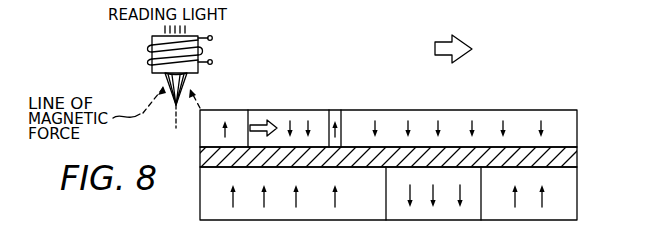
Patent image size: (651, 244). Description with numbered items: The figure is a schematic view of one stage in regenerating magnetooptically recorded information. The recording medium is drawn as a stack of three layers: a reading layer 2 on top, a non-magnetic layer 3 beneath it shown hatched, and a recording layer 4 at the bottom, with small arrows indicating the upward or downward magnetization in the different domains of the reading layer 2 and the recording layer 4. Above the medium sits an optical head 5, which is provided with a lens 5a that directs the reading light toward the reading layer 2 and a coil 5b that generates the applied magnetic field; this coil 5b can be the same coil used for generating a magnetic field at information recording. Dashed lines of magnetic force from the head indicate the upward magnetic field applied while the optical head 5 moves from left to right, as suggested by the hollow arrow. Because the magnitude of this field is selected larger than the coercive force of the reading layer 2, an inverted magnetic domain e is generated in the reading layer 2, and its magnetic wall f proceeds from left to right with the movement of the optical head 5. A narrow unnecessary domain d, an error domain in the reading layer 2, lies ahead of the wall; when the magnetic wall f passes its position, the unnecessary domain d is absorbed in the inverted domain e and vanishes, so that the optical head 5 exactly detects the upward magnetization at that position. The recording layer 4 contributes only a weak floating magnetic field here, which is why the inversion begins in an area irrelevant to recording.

The reading layer 2 is at (567, 123).
The non-magnetic layer 3 is at (568, 152).
The recording layer 4 is at (567, 187).
The optical head 5 is at (142, 62).
The lens 5a is at (188, 75).
The coil 5b is at (213, 38).
The unnecessary domain d is at (333, 110).
The inverted magnetic domain e is at (207, 126).
The magnetic wall f is at (247, 138).